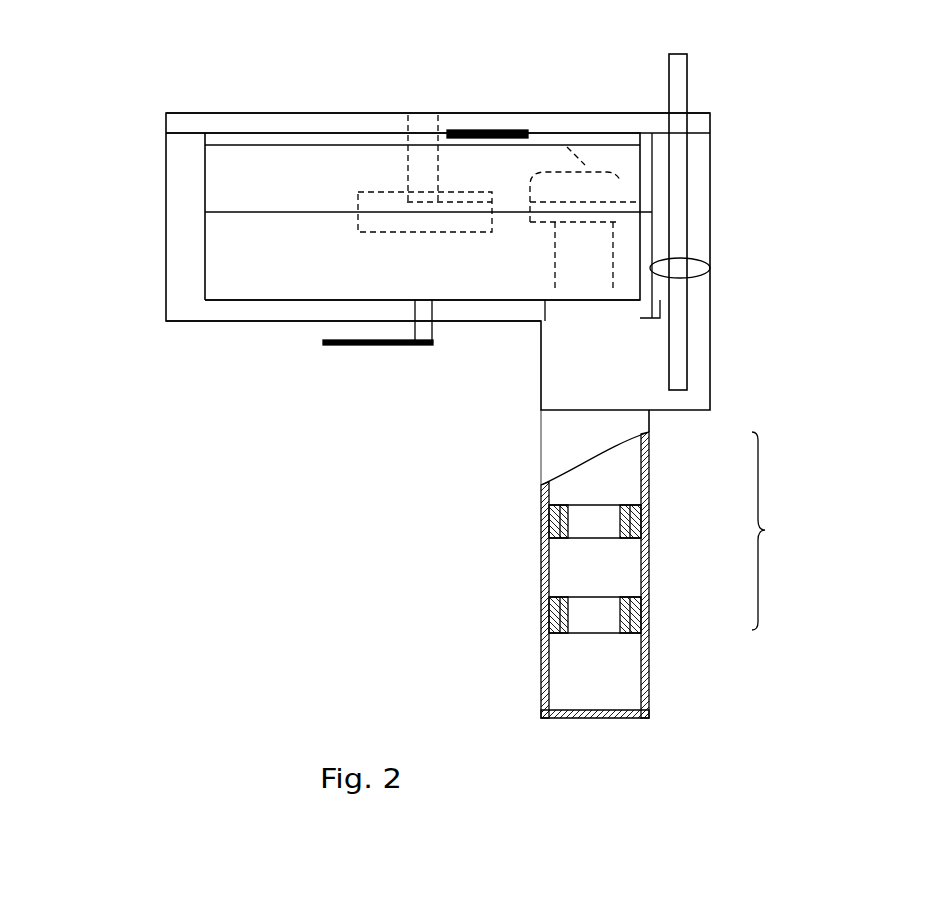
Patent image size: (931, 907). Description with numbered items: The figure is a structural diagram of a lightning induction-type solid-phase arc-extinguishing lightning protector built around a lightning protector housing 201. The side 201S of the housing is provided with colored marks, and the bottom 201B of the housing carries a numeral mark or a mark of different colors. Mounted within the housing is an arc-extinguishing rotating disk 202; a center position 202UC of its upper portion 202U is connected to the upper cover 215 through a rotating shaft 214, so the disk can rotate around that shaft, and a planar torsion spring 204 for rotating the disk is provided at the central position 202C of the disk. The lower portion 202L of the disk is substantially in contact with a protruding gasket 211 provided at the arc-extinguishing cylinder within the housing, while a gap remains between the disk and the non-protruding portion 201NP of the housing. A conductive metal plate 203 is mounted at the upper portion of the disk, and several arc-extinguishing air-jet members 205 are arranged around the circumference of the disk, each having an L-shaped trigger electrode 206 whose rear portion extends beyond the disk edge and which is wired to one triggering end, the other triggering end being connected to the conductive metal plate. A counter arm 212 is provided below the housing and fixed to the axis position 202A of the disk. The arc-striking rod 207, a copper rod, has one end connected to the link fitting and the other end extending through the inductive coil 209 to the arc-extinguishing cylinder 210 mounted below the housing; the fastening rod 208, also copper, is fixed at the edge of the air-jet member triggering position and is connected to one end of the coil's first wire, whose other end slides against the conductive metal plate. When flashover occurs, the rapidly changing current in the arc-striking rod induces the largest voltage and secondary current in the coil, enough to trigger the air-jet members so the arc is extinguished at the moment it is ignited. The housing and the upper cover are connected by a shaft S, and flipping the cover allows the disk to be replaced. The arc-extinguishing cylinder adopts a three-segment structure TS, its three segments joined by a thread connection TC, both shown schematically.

The lightning protector housing 201 is at (168, 285).
The side of the lightning protector housing 201S is at (165, 220).
The bottom of the lightning protector housing 201B is at (237, 322).
The non-protruding portion 201NP is at (320, 313).
The arc-extinguishing rotating disk 202 is at (232, 222).
The upper portion 202U is at (232, 177).
The lower portion 202L is at (220, 273).
The central position 202C is at (280, 212).
The axis position 202A is at (520, 347).
The center position 202UC is at (423, 147).
The conductive metal plate 203 is at (332, 140).
The planar torsion spring 204 is at (421, 210).
The arc-extinguishing air-jet member 205 is at (573, 250).
The L-shaped trigger electrode 206 is at (620, 207).
The arc-striking rod 207 is at (687, 73).
The fastening rod 208 is at (653, 180).
The inductive coil 209 is at (765, 295).
The arc-extinguishing cylinder 210 is at (675, 564).
The protruding gasket 211 is at (572, 312).
The counter arm 212 is at (375, 342).
The rotating shaft 214 is at (430, 130).
The upper cover 215 is at (205, 123).
The shaft S is at (487, 130).
The three-segment structure TS is at (630, 495).
The thread connection TC is at (560, 530).